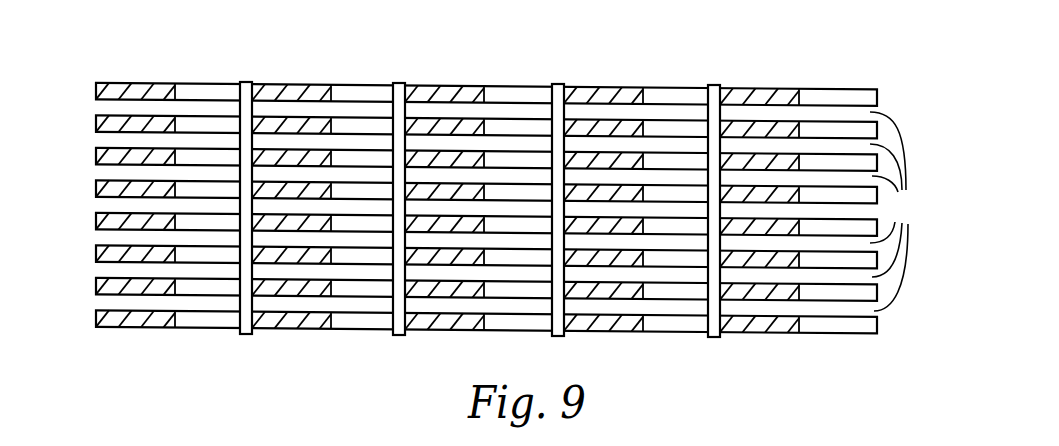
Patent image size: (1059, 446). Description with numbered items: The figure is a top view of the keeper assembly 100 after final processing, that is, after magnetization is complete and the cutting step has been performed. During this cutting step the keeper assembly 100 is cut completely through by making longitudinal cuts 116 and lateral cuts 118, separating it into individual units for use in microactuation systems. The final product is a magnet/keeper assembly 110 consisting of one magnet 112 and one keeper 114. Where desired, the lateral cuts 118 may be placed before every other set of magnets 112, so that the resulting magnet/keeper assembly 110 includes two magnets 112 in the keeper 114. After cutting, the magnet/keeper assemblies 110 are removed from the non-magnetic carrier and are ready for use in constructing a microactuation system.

The keeper assembly 100 is at (794, 67).
The magnet/keeper assembly 110 is at (94, 87).
The magnet 112 is at (99, 82).
The keeper 114 is at (220, 84).
The longitudinal cuts 116 is at (866, 210).
The lateral cuts 118 is at (394, 337).